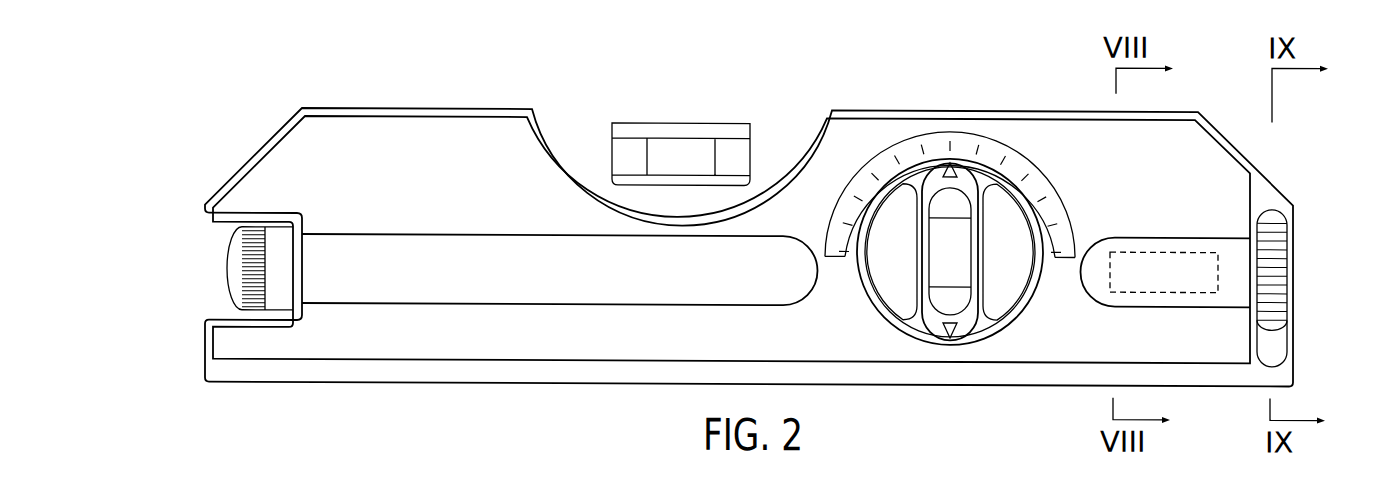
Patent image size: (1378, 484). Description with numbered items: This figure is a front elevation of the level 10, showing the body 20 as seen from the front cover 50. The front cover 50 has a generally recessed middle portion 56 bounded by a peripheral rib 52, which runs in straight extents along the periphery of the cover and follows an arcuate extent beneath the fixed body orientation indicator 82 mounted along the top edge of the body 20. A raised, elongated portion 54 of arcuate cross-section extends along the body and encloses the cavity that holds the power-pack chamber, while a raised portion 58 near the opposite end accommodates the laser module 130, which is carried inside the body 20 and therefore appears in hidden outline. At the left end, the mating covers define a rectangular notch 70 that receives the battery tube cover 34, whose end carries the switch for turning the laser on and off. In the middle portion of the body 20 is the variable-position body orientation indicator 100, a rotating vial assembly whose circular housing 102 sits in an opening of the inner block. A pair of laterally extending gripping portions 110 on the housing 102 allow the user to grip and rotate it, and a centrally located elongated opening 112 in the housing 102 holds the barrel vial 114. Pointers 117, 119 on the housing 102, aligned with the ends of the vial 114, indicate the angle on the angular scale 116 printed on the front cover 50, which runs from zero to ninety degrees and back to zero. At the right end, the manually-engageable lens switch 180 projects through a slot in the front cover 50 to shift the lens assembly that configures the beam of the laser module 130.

The level 10 is at (268, 109).
The body 20 is at (401, 107).
The battery tube cover 34 is at (278, 278).
The front cover 50 is at (293, 175).
The peripheral rib 52 is at (506, 110).
The raised elongated portion 54 is at (395, 278).
The recessed middle portion 56 is at (1200, 199).
The raised portion 58 is at (1223, 251).
The rectangular notch 70 is at (221, 220).
The fixed body orientation indicator 82 is at (706, 123).
The variable-position body orientation indicator 100 is at (915, 164).
The circular housing 102 is at (916, 320).
The gripping portions 110 is at (915, 258).
The elongated opening 112 is at (975, 216).
The barrel vial 114 is at (948, 197).
The angular scale 116 is at (1033, 167).
The pointer/indicator 117 is at (960, 344).
The pointer/indicator 119 is at (953, 162).
The laser module 130 is at (1162, 288).
The manually-engageable lens switch 180 is at (1274, 238).